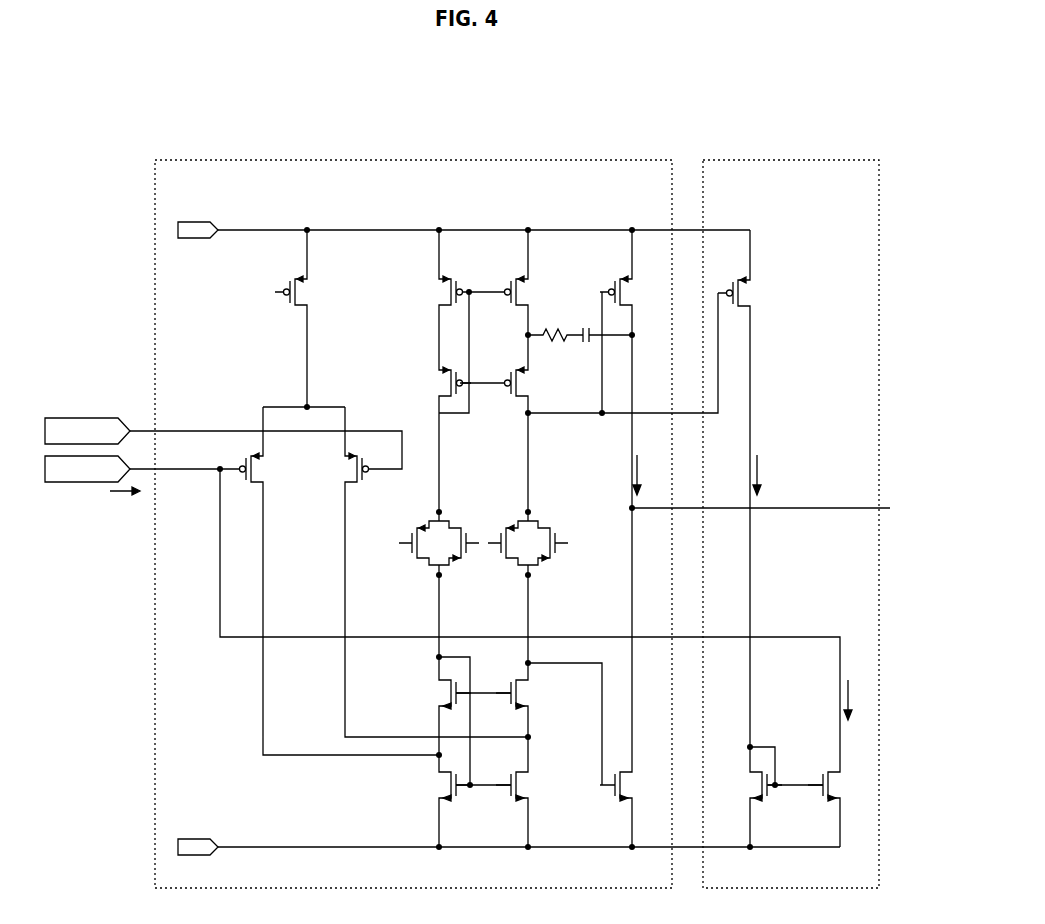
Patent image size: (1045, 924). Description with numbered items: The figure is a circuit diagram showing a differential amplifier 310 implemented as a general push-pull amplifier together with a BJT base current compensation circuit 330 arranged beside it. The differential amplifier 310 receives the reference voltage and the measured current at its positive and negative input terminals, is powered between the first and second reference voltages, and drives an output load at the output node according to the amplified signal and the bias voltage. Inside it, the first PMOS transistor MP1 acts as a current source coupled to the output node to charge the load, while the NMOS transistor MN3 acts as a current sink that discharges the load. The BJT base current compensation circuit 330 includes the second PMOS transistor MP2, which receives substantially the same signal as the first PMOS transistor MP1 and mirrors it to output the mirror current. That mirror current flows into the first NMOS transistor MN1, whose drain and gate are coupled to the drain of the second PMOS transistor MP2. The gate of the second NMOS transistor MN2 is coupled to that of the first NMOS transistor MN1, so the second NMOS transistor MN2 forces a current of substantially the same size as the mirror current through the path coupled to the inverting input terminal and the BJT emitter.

The differential amplifier 310 is at (436, 127).
The BJT base current compensation circuit 330 is at (808, 127).
The first PMOS transistor MP1 is at (637, 292).
The second PMOS transistor MP2 is at (756, 293).
The first NMOS transistor MN1 is at (743, 785).
The second NMOS transistor MN2 is at (847, 785).
The NMOS transistor MN3 is at (600, 789).